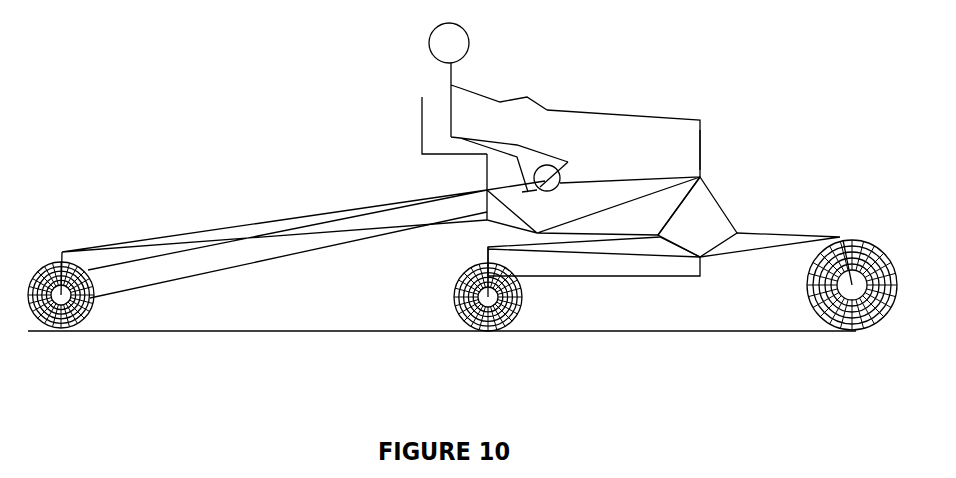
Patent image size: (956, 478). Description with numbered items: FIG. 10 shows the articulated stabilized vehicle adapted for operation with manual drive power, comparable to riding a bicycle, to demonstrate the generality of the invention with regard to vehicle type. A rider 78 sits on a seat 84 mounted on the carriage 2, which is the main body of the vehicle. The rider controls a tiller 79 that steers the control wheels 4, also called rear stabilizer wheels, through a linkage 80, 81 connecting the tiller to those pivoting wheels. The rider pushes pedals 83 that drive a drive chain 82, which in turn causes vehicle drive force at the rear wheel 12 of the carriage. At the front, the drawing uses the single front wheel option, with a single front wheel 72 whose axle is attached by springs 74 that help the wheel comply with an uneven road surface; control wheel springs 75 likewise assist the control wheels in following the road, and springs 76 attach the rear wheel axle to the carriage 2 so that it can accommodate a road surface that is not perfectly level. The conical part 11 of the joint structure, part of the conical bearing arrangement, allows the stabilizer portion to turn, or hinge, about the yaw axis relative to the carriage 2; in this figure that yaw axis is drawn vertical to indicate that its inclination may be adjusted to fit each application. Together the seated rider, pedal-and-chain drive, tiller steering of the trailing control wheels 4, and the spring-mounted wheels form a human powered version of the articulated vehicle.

The carriage 2 is at (257, 220).
The control wheel 4 is at (522, 297).
The conical part 11 is at (723, 203).
The rear wheel 12 is at (92, 289).
The single front wheel 72 is at (872, 328).
The springs 74 is at (840, 237).
The control wheel springs 75 is at (477, 257).
The springs 76 is at (62, 252).
The rider 78 is at (460, 83).
The tiller 79 is at (673, 78).
The linkage 80 is at (700, 148).
The linkage 81 is at (640, 276).
The drive chain 82 is at (248, 262).
The pedals 83 is at (568, 162).
The seat 84 is at (440, 157).